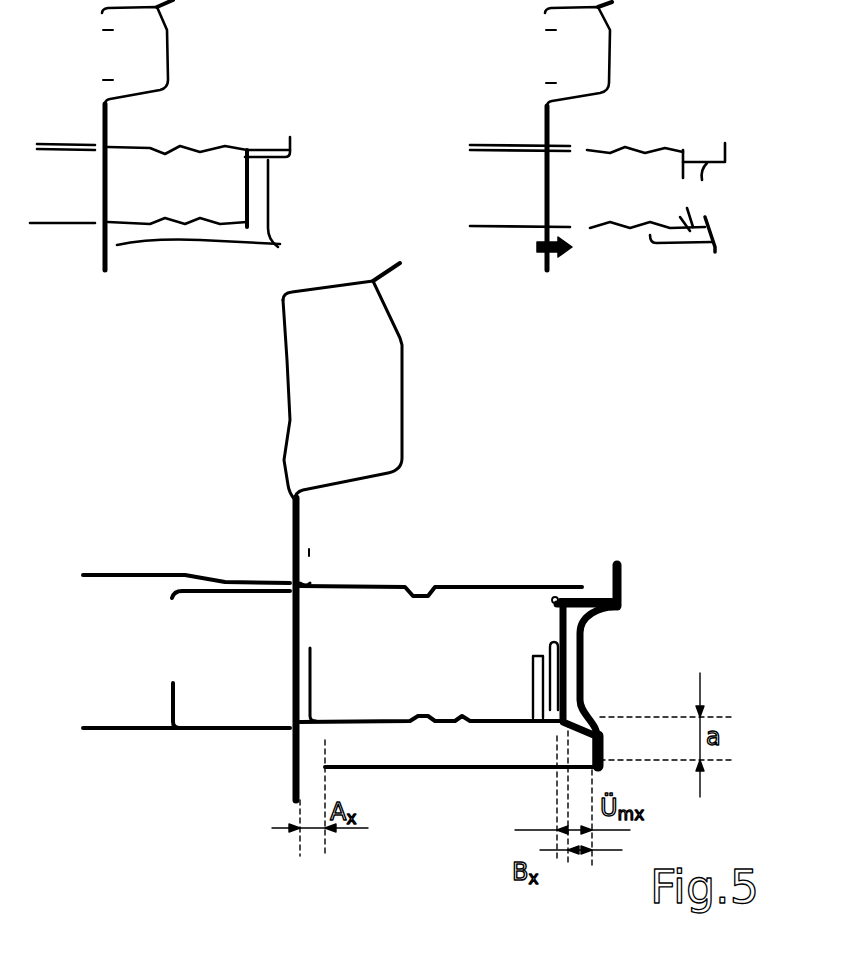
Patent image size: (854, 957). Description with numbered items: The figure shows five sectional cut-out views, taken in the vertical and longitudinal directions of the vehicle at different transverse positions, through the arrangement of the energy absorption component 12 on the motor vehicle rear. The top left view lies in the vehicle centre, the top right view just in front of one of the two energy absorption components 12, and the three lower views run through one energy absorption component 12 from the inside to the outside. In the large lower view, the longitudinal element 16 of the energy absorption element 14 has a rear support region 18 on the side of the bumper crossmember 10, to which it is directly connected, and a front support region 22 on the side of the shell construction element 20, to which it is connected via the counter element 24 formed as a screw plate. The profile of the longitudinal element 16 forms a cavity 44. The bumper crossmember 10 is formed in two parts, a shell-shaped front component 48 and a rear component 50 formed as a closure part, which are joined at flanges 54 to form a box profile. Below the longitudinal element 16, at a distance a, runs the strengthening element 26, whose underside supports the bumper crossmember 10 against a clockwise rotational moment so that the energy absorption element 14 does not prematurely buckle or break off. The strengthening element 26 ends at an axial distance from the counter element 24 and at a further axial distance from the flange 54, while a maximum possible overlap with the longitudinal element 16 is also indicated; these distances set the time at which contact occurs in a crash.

The bumper crossmember 10 is at (629, 613).
The energy absorption component 12 is at (503, 526).
The energy absorption element 14 is at (435, 513).
The longitudinal element 16 is at (507, 592).
The rear support region 18 is at (560, 600).
The shell construction element 20 is at (160, 734).
The front support region 22 is at (325, 584).
The counter element 24 is at (292, 625).
The strengthening element 26 is at (447, 738).
The cavity 44 is at (440, 666).
The front component 48 is at (575, 659).
The rear component 50 is at (578, 683).
The flange 54 is at (603, 747).